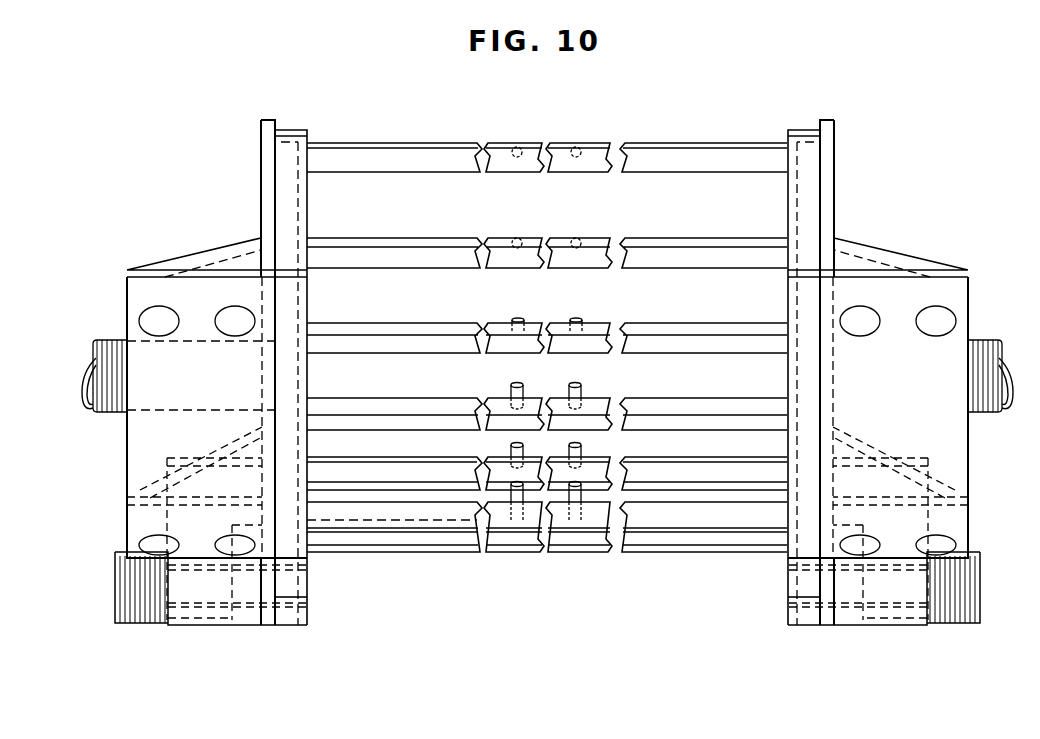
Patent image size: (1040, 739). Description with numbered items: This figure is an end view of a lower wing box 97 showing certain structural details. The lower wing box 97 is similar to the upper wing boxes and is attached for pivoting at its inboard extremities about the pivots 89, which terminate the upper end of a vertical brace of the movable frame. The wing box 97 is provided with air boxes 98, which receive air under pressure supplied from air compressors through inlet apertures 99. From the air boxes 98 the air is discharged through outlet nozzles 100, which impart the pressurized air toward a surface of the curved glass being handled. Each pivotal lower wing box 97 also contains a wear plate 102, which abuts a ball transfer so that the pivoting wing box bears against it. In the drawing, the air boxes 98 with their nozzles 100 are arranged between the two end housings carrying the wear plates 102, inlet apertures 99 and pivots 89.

The lower wing box 97 is at (252, 189).
The air box 98 is at (405, 543).
The inlet aperture 99 is at (98, 340).
The outlet nozzle 100 is at (514, 383).
The wear plate 102 is at (127, 443).
The pivot 89 is at (116, 588).